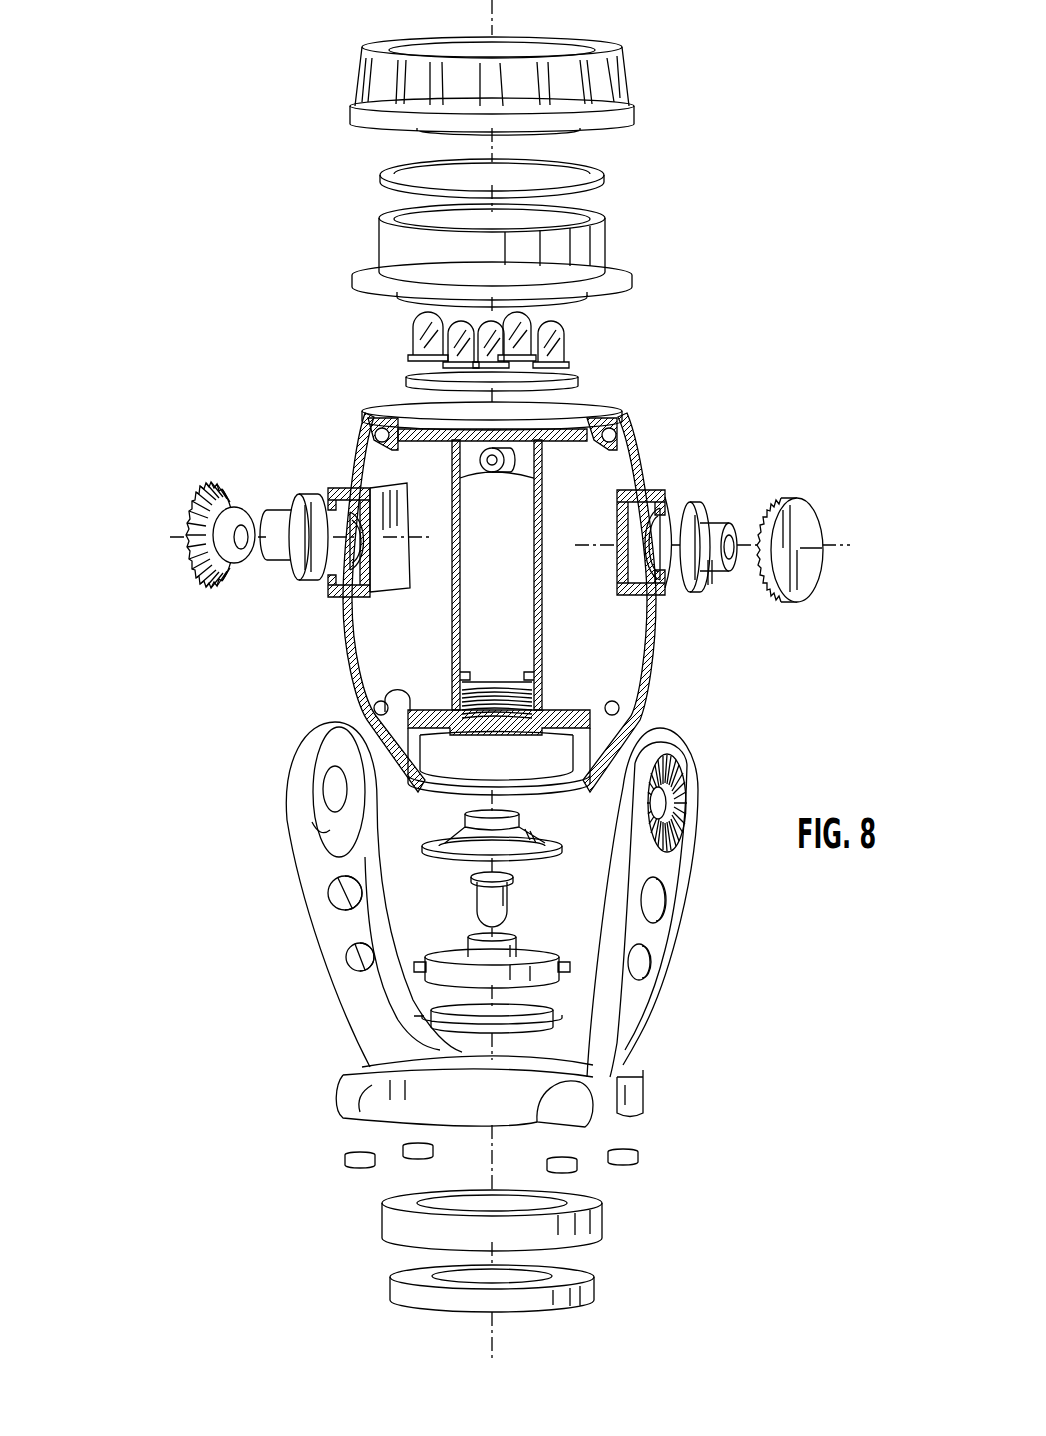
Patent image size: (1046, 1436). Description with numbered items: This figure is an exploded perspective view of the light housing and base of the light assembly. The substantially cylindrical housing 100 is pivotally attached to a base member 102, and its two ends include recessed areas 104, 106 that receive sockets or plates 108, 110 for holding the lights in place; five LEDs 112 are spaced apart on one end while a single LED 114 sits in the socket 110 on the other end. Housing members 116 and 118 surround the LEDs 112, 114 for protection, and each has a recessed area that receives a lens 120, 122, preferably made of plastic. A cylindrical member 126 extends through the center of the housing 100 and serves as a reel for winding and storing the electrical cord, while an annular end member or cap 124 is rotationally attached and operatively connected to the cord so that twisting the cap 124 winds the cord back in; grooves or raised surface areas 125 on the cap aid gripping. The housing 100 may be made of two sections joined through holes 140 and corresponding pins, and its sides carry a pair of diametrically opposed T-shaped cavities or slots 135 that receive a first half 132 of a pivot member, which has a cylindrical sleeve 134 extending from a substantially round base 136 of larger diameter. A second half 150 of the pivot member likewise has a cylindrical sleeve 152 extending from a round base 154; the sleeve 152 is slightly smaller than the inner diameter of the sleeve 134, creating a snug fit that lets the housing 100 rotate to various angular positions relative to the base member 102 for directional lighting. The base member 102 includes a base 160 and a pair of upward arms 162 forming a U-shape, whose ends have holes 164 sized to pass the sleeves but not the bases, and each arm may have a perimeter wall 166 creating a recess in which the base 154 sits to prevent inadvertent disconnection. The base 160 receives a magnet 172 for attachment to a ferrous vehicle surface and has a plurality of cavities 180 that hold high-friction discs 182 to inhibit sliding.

The housing 100 is at (650, 648).
The base member 102 is at (486, 924).
The recessed area 104 is at (583, 408).
The recessed area 106 is at (612, 715).
The socket or plate 108 is at (413, 372).
The socket 110 is at (520, 830).
The LEDs 112 is at (560, 347).
The LED 114 is at (503, 905).
The housing member 116 is at (598, 246).
The housing member 118 is at (565, 965).
The lens 120 is at (603, 178).
The lens 122 is at (550, 1023).
The end member 124 is at (621, 88).
The grooves and/or raised surface areas 125 is at (395, 97).
The cylindrical member 126 is at (388, 657).
The first half of pivot member 132 is at (340, 592).
The cylindrical sleeve 134 is at (280, 515).
The cavities or slots 135 is at (662, 487).
The base 136 is at (297, 497).
The holes 140 is at (627, 420).
The second half of pivot member 150 is at (200, 548).
The cylindrical sleeve 152 is at (763, 522).
The base 154 is at (800, 578).
The base 160 is at (350, 1105).
The arms 162 is at (668, 905).
The holes 164 is at (318, 832).
The wall 166 is at (685, 752).
The magnet 172 is at (578, 1298).
The cavities 180 is at (630, 1093).
The discs 182 is at (640, 1152).